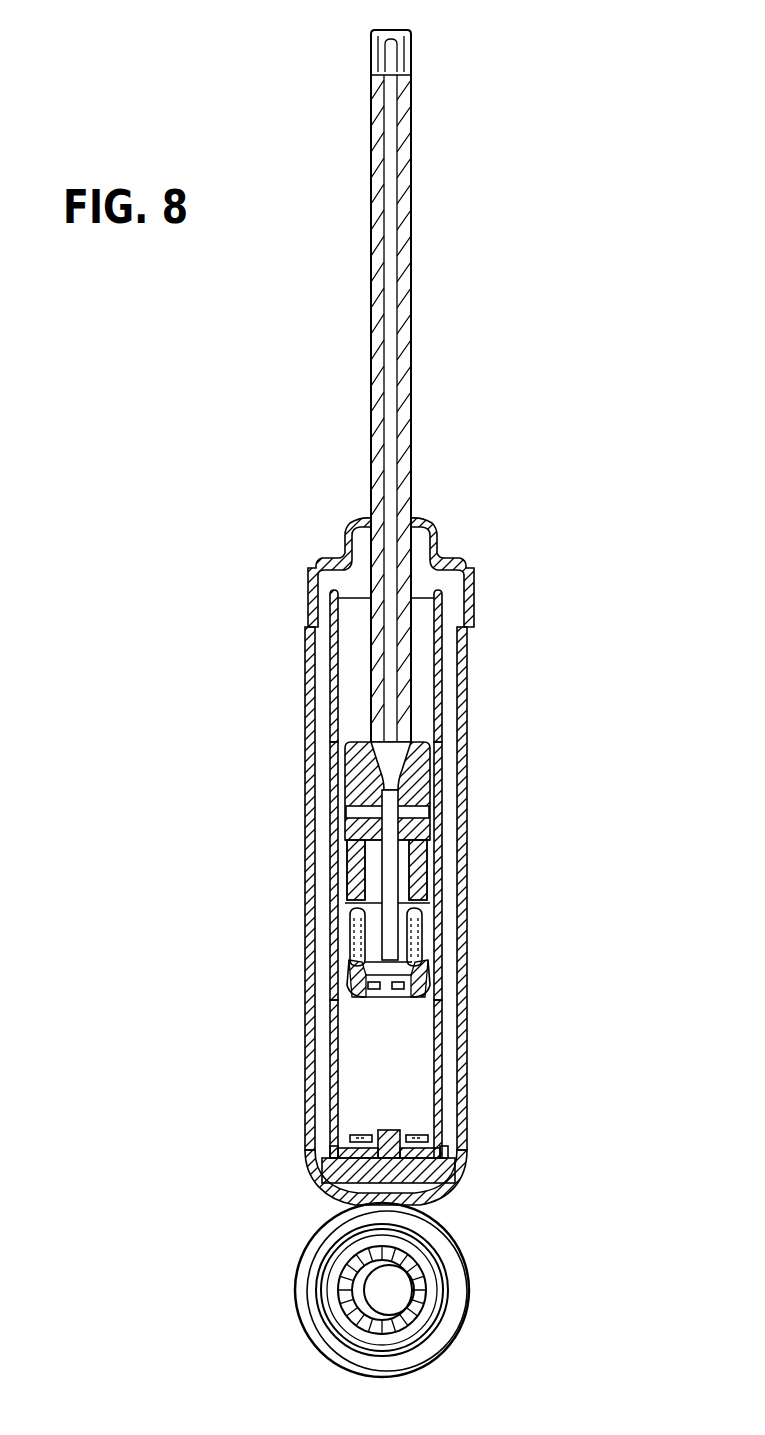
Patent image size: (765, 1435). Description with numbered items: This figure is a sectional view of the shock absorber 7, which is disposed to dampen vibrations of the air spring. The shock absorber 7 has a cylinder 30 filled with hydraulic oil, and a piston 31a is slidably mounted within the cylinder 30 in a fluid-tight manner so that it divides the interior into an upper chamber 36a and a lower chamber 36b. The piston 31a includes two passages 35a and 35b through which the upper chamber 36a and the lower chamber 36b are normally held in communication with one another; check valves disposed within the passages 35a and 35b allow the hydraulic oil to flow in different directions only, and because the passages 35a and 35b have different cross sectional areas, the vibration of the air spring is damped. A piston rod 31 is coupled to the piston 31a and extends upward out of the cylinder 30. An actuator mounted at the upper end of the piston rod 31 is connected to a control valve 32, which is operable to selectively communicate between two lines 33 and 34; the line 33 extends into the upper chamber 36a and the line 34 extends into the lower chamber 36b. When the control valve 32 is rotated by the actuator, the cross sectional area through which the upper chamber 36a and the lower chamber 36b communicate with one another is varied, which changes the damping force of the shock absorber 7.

The shock absorber 7 is at (369, 518).
The cylinder 30 is at (306, 688).
The piston rod 31 is at (412, 405).
The piston 31a is at (400, 890).
The control valve 32 is at (345, 818).
The line 33 is at (430, 813).
The line 34 is at (380, 952).
The passage 35a is at (420, 879).
The passage 35b is at (365, 885).
The upper chamber 36a is at (423, 653).
The lower chamber 36b is at (415, 1073).